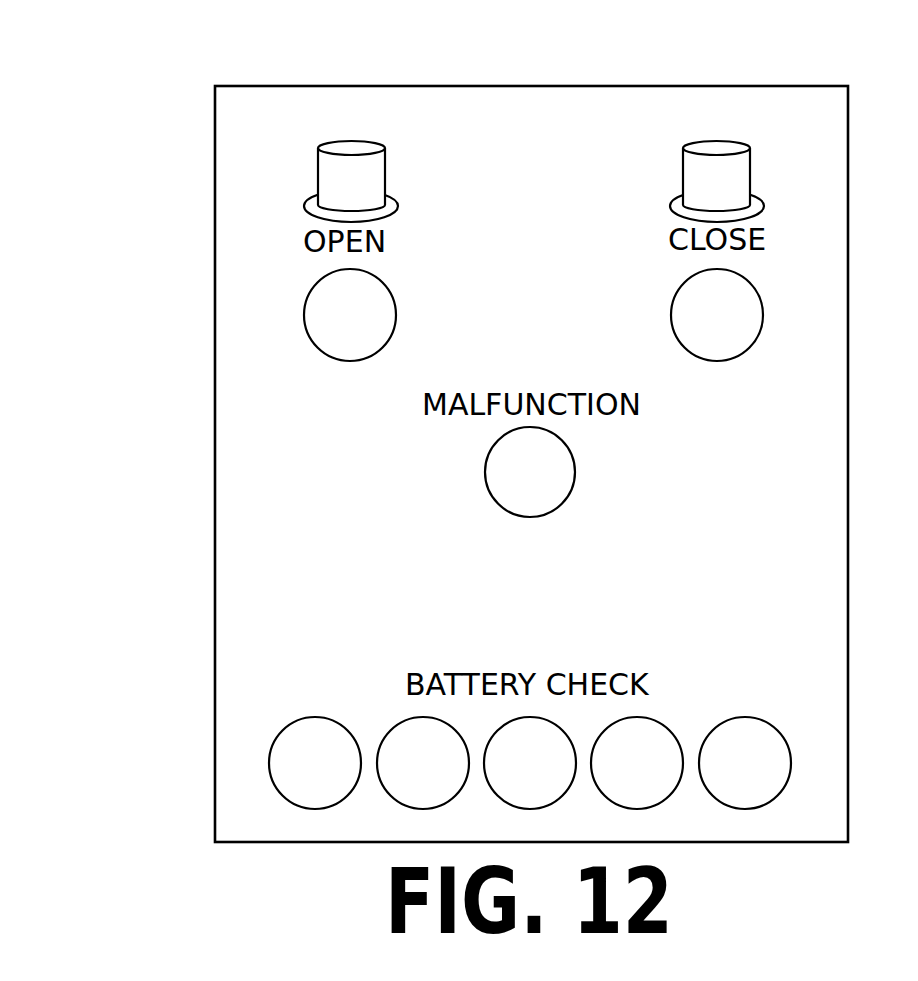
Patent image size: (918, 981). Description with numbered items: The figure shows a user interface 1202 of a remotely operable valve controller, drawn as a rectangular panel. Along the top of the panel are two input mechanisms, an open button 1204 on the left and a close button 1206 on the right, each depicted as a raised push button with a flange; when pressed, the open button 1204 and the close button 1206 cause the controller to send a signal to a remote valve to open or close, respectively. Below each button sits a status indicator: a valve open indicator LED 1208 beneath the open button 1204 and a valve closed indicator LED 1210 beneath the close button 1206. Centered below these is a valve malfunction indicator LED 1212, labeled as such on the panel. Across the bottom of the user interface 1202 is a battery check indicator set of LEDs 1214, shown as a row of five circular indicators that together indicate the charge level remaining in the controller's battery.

The user interface 1202 is at (622, 86).
The open button 1204 is at (385, 175).
The close button 1206 is at (683, 173).
The valve open indicator LED 1208 is at (396, 309).
The valve closed indicator LED 1210 is at (760, 322).
The valve malfunction indicator LED 1212 is at (530, 517).
The battery check indicator set of LEDs 1214 is at (230, 765).